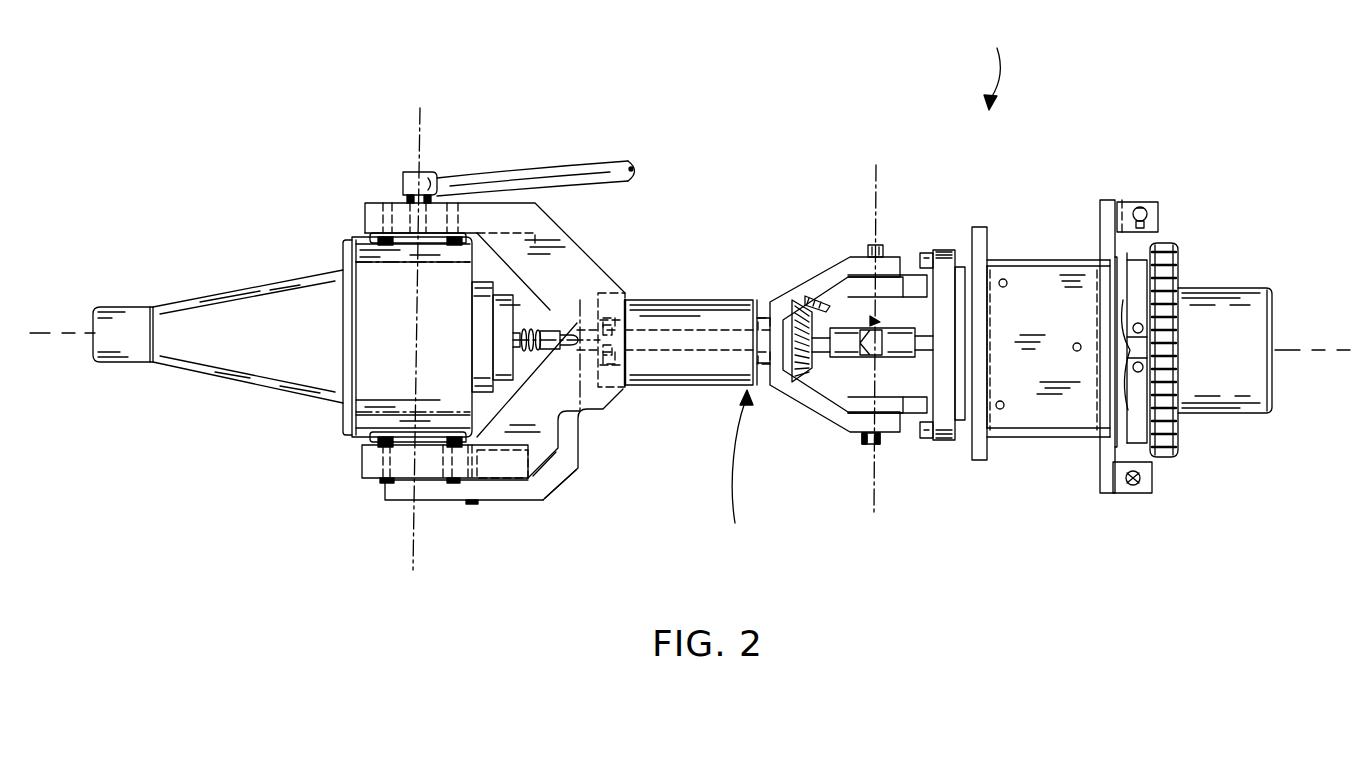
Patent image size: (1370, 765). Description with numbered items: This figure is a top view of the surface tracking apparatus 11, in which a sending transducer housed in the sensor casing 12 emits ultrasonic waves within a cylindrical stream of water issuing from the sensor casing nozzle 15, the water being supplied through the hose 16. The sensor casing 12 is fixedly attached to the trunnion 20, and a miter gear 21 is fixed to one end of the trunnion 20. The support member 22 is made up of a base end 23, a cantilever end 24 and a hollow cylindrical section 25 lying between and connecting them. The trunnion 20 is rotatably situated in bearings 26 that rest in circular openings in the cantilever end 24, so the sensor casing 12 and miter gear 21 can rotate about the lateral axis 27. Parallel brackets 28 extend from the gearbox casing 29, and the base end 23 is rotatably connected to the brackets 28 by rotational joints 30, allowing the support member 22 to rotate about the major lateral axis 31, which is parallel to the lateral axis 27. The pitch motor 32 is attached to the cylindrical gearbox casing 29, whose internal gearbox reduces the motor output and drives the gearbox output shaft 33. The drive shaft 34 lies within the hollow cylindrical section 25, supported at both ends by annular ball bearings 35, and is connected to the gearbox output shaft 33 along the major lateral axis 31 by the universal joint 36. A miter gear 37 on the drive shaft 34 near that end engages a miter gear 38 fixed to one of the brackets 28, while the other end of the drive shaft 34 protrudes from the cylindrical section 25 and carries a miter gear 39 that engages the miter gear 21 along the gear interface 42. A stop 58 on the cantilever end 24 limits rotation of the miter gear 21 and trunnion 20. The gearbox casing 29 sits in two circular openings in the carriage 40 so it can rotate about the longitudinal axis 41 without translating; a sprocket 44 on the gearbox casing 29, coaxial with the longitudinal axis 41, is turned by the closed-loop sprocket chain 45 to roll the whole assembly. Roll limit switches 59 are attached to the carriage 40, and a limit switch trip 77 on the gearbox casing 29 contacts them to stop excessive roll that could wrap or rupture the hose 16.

The surface tracking apparatus 11 is at (997, 70).
The sensor casing 12 is at (421, 349).
The sensor casing nozzle 15 is at (138, 307).
The hose 16 is at (601, 175).
The trunnion 20 is at (398, 200).
The miter gear 21 is at (500, 502).
The support member 22 is at (739, 473).
The base end 23 is at (780, 402).
The cantilever end 24 is at (588, 270).
The hollow cylindrical section 25 is at (690, 300).
The bearings 26 is at (383, 200).
The lateral axis 27 is at (422, 120).
The parallel brackets 28 is at (923, 253).
The gearbox casing 29 is at (1052, 260).
The rotational joints 30 is at (883, 245).
The major lateral axis 31 is at (885, 527).
The pitch motor 32 is at (1230, 288).
The gearbox output shaft 33 is at (923, 357).
The drive shaft 34 is at (710, 352).
The annular ball bearings 35 is at (763, 302).
The universal joint 36 is at (884, 322).
The miter gear 37 is at (812, 360).
The miter gear 38 is at (830, 307).
The miter gear 39 is at (600, 410).
The carriage 40 is at (1063, 322).
The longitudinal axis 41 is at (63, 333).
The gear interface 42 is at (562, 482).
The sprocket 44 is at (1167, 243).
The sprocket chain 45 is at (1175, 437).
The stop 58 is at (478, 503).
The roll limit switches 59 is at (1152, 202).
The limit switch trip 77 is at (1110, 427).